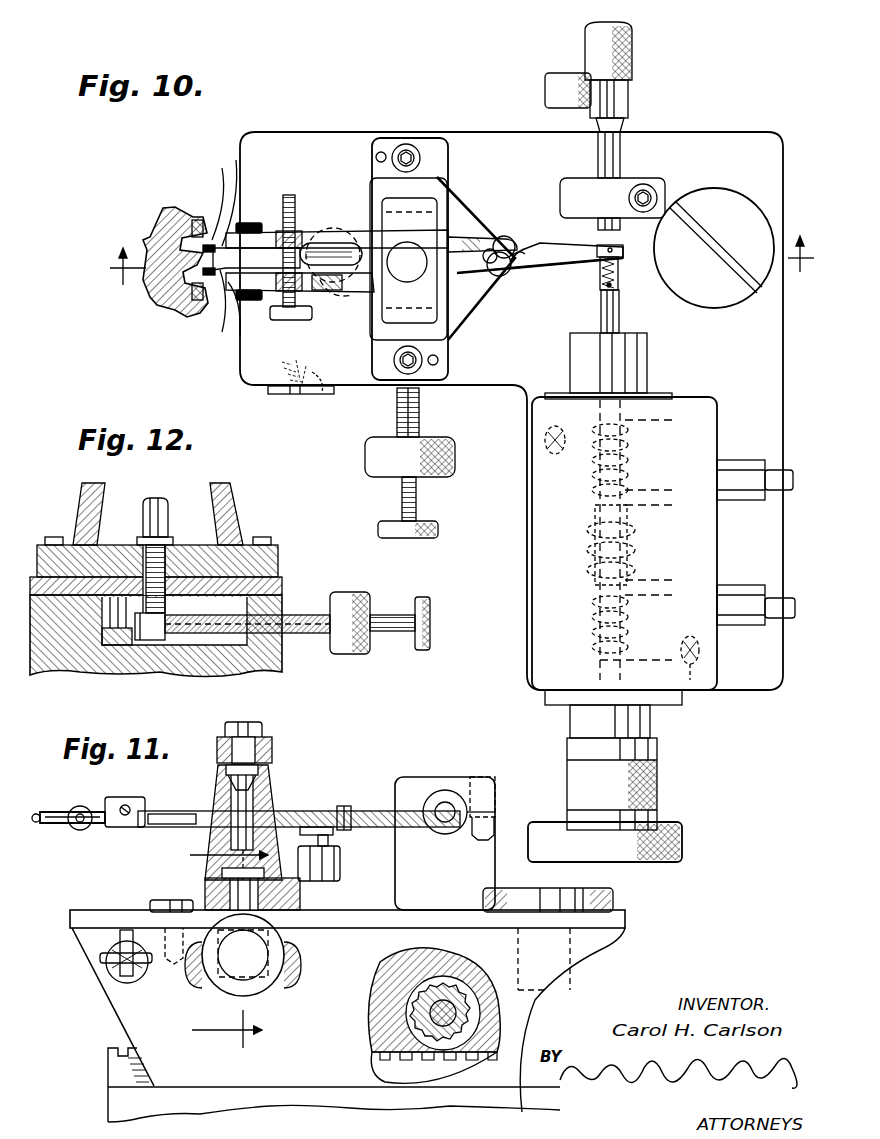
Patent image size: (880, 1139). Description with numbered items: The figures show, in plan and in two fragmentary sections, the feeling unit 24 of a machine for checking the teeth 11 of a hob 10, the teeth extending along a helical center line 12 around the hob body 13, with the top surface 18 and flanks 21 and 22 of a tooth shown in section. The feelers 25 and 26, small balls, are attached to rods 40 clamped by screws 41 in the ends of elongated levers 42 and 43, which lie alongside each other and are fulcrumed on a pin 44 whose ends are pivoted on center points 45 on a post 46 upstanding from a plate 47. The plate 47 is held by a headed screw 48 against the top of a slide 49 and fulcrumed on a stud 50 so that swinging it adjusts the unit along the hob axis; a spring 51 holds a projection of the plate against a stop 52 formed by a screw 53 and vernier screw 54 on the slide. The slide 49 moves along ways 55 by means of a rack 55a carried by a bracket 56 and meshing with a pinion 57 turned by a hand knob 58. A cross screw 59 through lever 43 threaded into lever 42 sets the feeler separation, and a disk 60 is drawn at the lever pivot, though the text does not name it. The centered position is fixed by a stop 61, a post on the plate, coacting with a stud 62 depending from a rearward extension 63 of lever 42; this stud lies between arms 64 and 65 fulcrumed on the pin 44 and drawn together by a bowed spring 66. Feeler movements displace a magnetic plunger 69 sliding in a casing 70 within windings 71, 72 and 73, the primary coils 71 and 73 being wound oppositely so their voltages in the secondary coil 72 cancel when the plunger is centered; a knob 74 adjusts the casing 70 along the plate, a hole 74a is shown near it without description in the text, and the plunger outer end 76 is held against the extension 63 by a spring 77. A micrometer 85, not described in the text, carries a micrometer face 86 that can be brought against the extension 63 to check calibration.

In FIG. 10, the hob 10 is at (200, 210).
In FIG. 10, the teeth 11 is at (462, 249).
In FIG. 11, the helical center line 12 is at (214, 947).
In FIG. 10, the hob body 13 is at (166, 210).
In FIG. 10, the top surface 18 is at (212, 238).
In FIG. 10, the tooth flank 21 is at (200, 220).
In FIG. 10, the tooth flank 22 is at (180, 326).
In FIG. 10, the feeling unit 24 is at (226, 318).
In FIG. 11, the feeling unit 24 is at (42, 828).
In FIG. 10, the feeler element 25 is at (216, 300).
In FIG. 10, the feeler element 26 is at (222, 168).
In FIG. 10, the rods 40 is at (232, 265).
In FIG. 11, the rods 40 is at (58, 819).
In FIG. 10, the screws 41 is at (252, 224).
In FIG. 11, the screws 41 is at (90, 806).
In FIG. 10, the lever 42 is at (298, 228).
In FIG. 11, the lever 42 is at (126, 800).
In FIG. 10, the lever 43 is at (355, 292).
In FIG. 12, the pin 44 is at (170, 504).
In FIG. 11, the pin 44 is at (258, 790).
In FIG. 12, the center points 45 is at (172, 540).
In FIG. 11, the center points 45 is at (230, 772).
In FIG. 10, the post 46 is at (437, 332).
In FIG. 12, the post 46 is at (243, 518).
In FIG. 11, the post 46 is at (273, 752).
In FIG. 10, the plate 47 is at (497, 376).
In FIG. 12, the plate 47 is at (284, 588).
In FIG. 11, the plate 47 is at (368, 912).
In FIG. 10, the headed screw 48 is at (335, 241).
In FIG. 11, the headed screw 48 is at (153, 904).
In FIG. 12, the slide 49 is at (284, 660).
In FIG. 11, the slide 49 is at (96, 1004).
In FIG. 10, the stud 50 is at (735, 206).
In FIG. 11, the stud 50 is at (616, 894).
In FIG. 10, the spring 51 is at (300, 393).
In FIG. 11, the spring 51 is at (136, 972).
In FIG. 12, the stop 52 is at (162, 642).
In FIG. 10, the screw 53 is at (420, 410).
In FIG. 12, the screw 53 is at (284, 622).
In FIG. 11, the screw 53 is at (280, 990).
In FIG. 10, the vernier screw 54 is at (416, 500).
In FIG. 12, the vernier screw 54 is at (400, 634).
In FIG. 11, the vernier screw 54 is at (222, 988).
In FIG. 11, the ways 55 is at (106, 1070).
In FIG. 11, the rack 55a is at (120, 1049).
In FIG. 11, the bracket 56 is at (512, 1094).
In FIG. 11, the pinion 57 is at (472, 1000).
In FIG. 10, the hand knob 58 is at (686, 836).
In FIG. 10, the cross screw 59 is at (292, 321).
In FIG. 10, the lever disk 60 is at (407, 262).
In FIG. 11, the lever disk 60 is at (155, 828).
In FIG. 10, the stop 61 is at (482, 246).
In FIG. 11, the stop 61 is at (342, 850).
In FIG. 10, the stud 62 is at (507, 276).
In FIG. 11, the stud 62 is at (343, 808).
In FIG. 10, the extension 63 is at (555, 250).
In FIG. 11, the extension 63 is at (418, 828).
In FIG. 10, the arm 64 is at (492, 238).
In FIG. 10, the arm 65 is at (490, 276).
In FIG. 10, the bowed spring 66 is at (515, 252).
In FIG. 11, the bowed spring 66 is at (334, 832).
In FIG. 10, the magnetic plunger 69 is at (622, 305).
In FIG. 10, the casing 70 is at (718, 438).
In FIG. 10, the primary coil 71 is at (592, 462).
In FIG. 10, the secondary coil 72 is at (590, 545).
In FIG. 10, the primary coil 73 is at (592, 623).
In FIG. 10, the knob 74 is at (693, 665).
In FIG. 10, the bolt hole 74a is at (700, 652).
In FIG. 10, the outer end 76 is at (628, 264).
In FIG. 10, the spring 77 is at (600, 276).
In FIG. 10, the micrometer head 85 is at (635, 62).
In FIG. 10, the micrometer face 86 is at (619, 226).